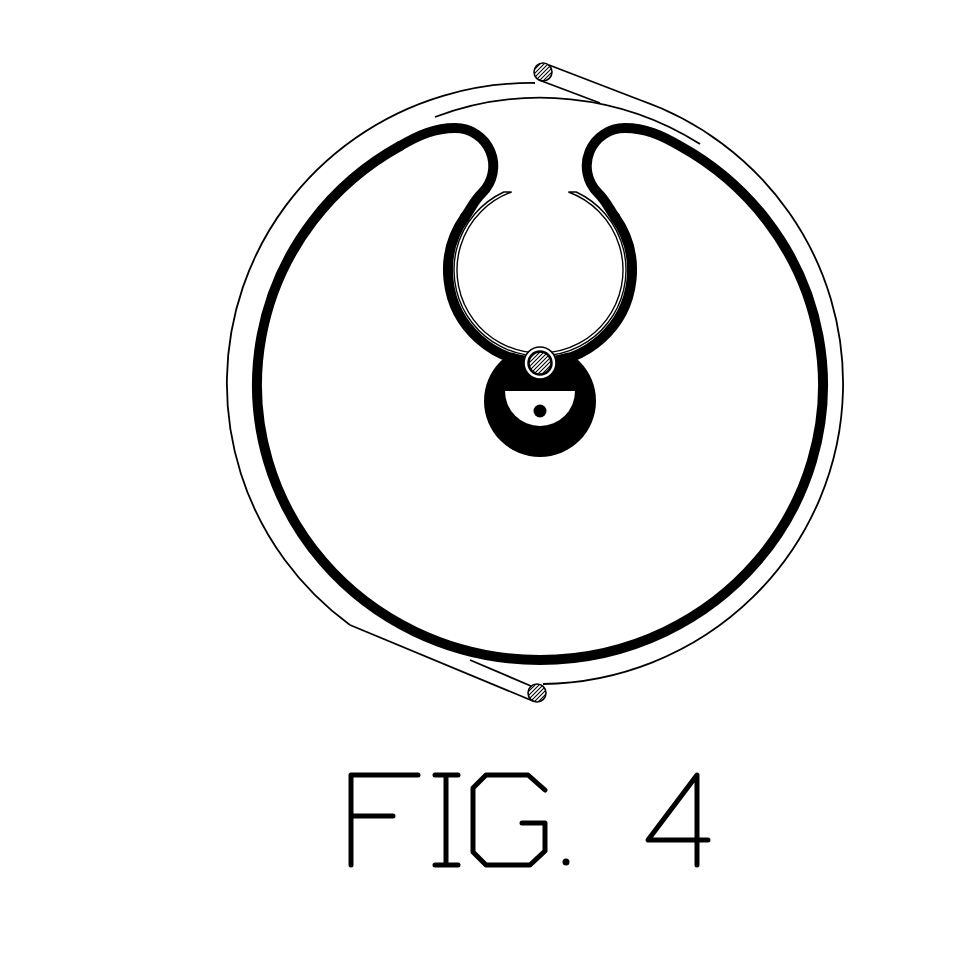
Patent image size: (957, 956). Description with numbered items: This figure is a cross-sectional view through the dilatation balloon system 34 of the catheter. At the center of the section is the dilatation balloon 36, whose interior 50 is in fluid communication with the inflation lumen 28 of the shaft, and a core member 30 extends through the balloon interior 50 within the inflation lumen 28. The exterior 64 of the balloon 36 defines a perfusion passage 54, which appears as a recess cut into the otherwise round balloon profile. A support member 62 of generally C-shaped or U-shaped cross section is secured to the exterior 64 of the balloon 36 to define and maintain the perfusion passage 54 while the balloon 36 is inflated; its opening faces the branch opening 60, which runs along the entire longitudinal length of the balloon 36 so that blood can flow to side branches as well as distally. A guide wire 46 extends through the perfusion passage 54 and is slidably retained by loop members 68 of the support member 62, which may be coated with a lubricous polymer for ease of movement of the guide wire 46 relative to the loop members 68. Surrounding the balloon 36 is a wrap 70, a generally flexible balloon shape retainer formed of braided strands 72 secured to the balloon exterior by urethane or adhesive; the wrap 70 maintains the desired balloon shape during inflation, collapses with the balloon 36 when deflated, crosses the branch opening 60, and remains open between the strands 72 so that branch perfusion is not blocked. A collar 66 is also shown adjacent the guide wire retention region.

The dilatation balloon system 34 is at (525, 369).
The wrap 70 is at (495, 373).
The strands 72 is at (632, 369).
The branch opening 60 is at (597, 95).
The dilatation balloon 36 is at (553, 394).
The interior 50 is at (553, 394).
The perfusion passage 54 is at (639, 272).
The exterior 64 is at (504, 289).
The support member 62 is at (640, 249).
The loop members 68 is at (511, 339).
The guide wire 46 is at (458, 341).
The collar 66 is at (602, 366).
The core member 30 is at (546, 412).
The inflation lumen 28 is at (592, 439).